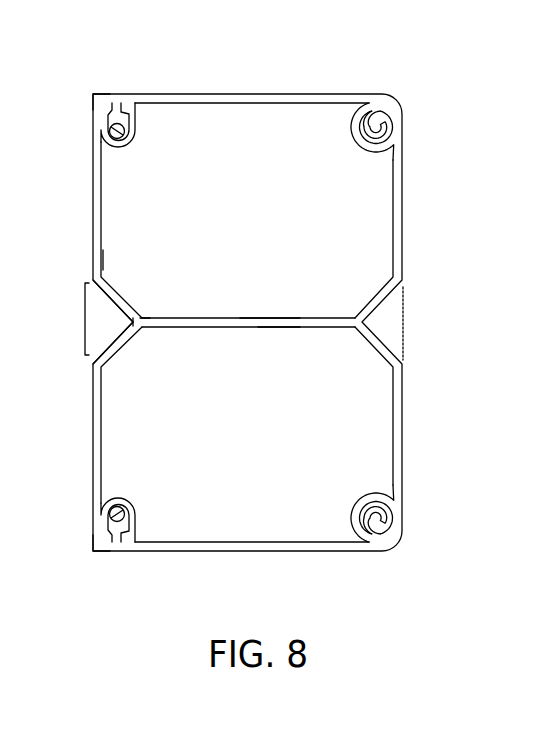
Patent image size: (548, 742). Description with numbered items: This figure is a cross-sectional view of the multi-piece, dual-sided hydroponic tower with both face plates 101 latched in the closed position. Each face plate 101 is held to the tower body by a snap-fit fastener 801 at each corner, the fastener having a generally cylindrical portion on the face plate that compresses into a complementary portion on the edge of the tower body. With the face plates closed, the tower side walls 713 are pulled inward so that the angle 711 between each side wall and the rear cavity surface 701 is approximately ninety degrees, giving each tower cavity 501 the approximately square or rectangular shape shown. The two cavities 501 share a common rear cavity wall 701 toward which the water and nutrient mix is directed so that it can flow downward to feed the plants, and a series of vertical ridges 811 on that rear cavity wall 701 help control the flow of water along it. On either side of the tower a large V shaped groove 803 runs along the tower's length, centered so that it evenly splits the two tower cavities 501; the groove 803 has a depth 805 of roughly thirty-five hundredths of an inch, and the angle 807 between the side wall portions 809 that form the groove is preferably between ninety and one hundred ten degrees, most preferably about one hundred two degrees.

The face plate 101 is at (262, 93).
The tower cavity 501 is at (271, 231).
The cavity rear surface 701 is at (237, 329).
The angle between side walls and rear cavity surface 711 is at (108, 239).
The side wall 713 is at (93, 222).
The snap-fit fastener 801 is at (82, 93).
The V shaped groove 803 is at (84, 322).
The groove depth 805 is at (366, 322).
The angle between side wall portions 807 is at (114, 322).
The side wall portions 809 is at (114, 335).
The vertical ridges 811 is at (248, 316).